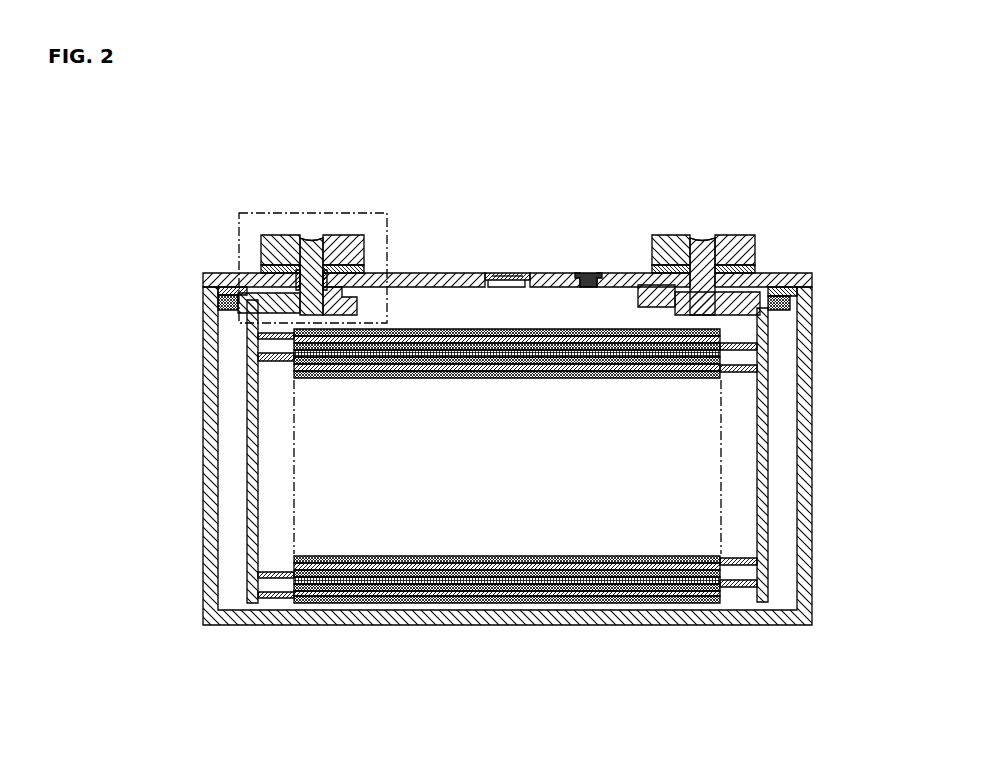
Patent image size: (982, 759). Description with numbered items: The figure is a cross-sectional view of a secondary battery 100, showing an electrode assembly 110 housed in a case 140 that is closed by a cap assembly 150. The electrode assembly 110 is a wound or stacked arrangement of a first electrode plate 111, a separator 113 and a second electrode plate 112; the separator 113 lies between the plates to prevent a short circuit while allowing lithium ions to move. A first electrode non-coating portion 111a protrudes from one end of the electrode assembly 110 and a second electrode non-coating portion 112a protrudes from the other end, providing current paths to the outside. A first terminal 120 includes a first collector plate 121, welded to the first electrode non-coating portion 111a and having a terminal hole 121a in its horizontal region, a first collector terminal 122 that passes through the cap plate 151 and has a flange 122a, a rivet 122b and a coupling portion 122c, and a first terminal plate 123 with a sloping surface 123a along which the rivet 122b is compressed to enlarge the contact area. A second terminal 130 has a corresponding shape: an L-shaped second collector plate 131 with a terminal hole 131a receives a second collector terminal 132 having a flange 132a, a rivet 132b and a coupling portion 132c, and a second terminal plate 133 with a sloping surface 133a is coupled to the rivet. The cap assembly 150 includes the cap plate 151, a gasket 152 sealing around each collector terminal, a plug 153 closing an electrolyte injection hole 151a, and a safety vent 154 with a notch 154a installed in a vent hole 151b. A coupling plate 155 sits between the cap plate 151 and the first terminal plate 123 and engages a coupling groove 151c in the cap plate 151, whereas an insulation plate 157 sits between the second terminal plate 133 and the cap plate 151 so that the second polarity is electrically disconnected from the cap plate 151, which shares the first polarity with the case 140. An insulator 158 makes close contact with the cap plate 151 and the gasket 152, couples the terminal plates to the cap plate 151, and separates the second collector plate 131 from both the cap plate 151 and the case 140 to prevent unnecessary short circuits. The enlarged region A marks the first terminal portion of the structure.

The secondary battery 100 is at (812, 125).
The electrode assembly 110 is at (507, 503).
The first electrode plate 111 is at (394, 603).
The first electrode non-coating portion 111a is at (272, 600).
The second electrode plate 112 is at (652, 604).
The second electrode non-coating portion 112a is at (740, 604).
The separator 113 is at (522, 603).
The first terminal 120 is at (317, 207).
The first collector plate 121 is at (246, 431).
The terminal hole 121a is at (232, 308).
The first collector terminal 122 is at (292, 214).
The flange 122a is at (245, 296).
The rivet 122b is at (293, 238).
The coupling portion 122c is at (288, 233).
The first terminal plate 123 is at (259, 248).
The sloping surface 123a is at (355, 237).
The second terminal 130 is at (703, 214).
The second collector plate 131 is at (770, 432).
The terminal hole 131a is at (775, 307).
The second collector terminal 132 is at (745, 278).
The flange 132a is at (773, 303).
The rivet 132b is at (715, 238).
The coupling portion 132c is at (678, 232).
The second terminal plate 133 is at (760, 247).
The sloping surface 133a is at (720, 242).
The case 140 is at (805, 368).
The cap assembly 150 is at (592, 197).
The cap plate 151 is at (445, 273).
The electrolyte injection hole 151a is at (585, 291).
The vent hole 151b is at (508, 289).
The coupling groove 151c is at (372, 274).
The gasket 152 is at (380, 283).
The plug 153 is at (585, 272).
The safety vent 154 is at (525, 272).
The notch 154a is at (507, 273).
The coupling plate 155 is at (357, 266).
The insulation plate 157 is at (650, 267).
The insulator 158 is at (376, 298).
The enlarged region A is at (337, 213).